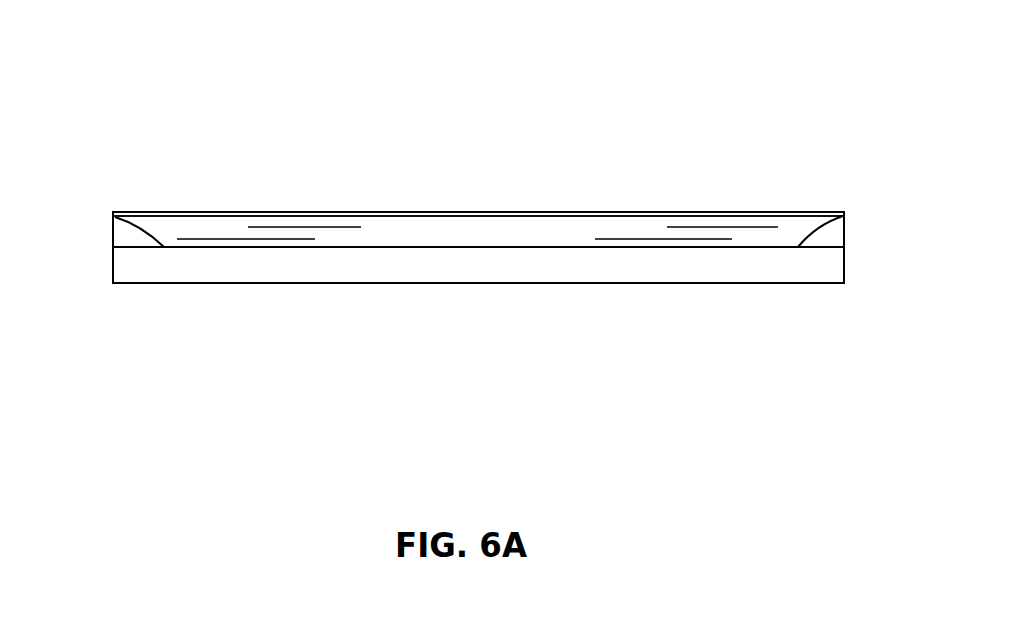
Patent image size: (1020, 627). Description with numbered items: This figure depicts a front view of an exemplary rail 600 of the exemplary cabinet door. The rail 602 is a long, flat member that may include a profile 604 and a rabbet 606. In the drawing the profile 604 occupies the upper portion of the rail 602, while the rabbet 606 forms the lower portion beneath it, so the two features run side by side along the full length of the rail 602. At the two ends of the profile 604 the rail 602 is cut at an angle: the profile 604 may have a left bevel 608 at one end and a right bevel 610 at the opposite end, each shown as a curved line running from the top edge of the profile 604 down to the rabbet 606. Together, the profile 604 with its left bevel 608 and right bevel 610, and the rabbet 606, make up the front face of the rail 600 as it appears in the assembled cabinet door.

The rail 600 is at (815, 87).
The rail 602 is at (113, 227).
The profile 604 is at (478, 230).
The rabbet 606 is at (474, 260).
The left bevel 608 is at (122, 238).
The right bevel 610 is at (832, 234).